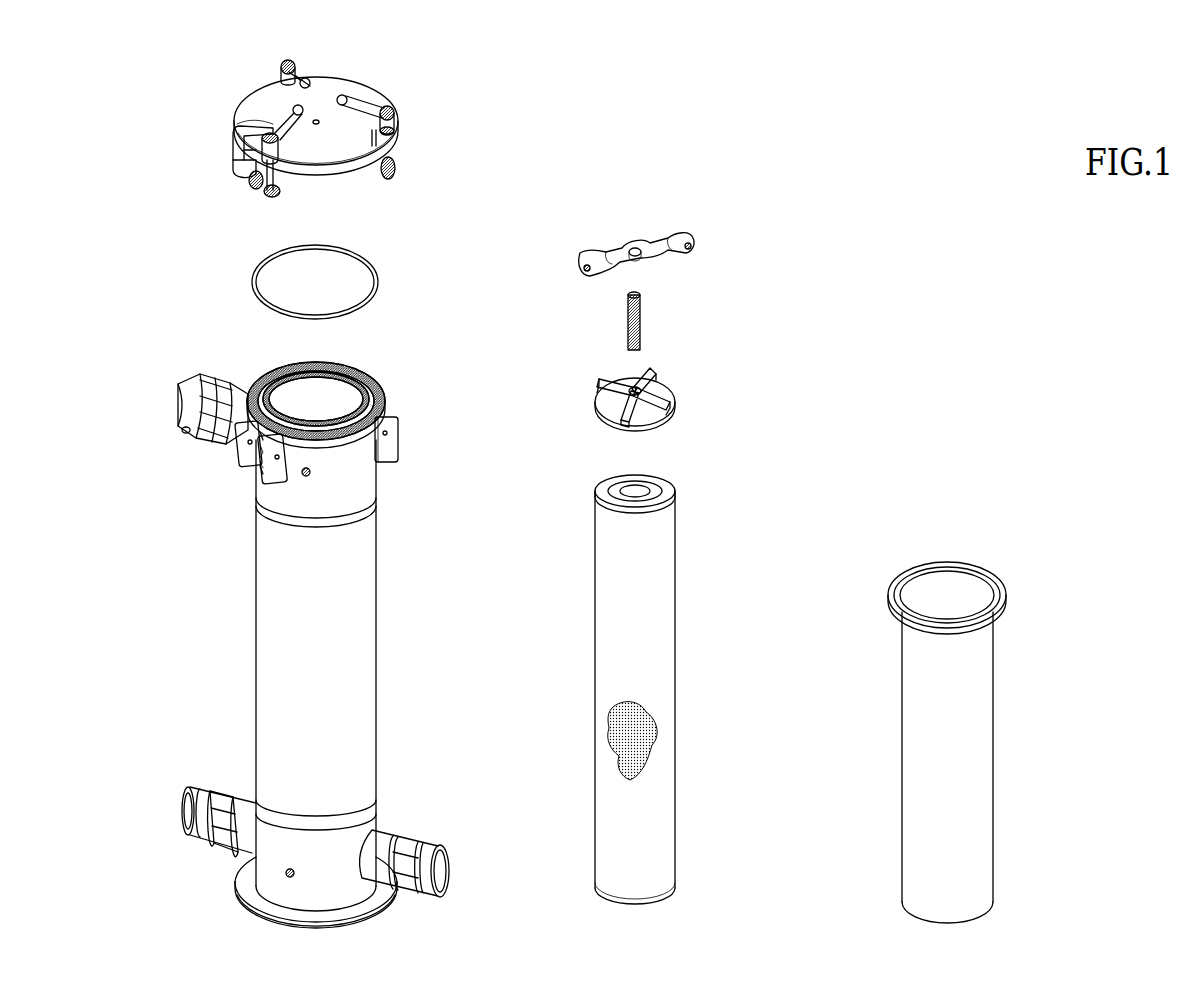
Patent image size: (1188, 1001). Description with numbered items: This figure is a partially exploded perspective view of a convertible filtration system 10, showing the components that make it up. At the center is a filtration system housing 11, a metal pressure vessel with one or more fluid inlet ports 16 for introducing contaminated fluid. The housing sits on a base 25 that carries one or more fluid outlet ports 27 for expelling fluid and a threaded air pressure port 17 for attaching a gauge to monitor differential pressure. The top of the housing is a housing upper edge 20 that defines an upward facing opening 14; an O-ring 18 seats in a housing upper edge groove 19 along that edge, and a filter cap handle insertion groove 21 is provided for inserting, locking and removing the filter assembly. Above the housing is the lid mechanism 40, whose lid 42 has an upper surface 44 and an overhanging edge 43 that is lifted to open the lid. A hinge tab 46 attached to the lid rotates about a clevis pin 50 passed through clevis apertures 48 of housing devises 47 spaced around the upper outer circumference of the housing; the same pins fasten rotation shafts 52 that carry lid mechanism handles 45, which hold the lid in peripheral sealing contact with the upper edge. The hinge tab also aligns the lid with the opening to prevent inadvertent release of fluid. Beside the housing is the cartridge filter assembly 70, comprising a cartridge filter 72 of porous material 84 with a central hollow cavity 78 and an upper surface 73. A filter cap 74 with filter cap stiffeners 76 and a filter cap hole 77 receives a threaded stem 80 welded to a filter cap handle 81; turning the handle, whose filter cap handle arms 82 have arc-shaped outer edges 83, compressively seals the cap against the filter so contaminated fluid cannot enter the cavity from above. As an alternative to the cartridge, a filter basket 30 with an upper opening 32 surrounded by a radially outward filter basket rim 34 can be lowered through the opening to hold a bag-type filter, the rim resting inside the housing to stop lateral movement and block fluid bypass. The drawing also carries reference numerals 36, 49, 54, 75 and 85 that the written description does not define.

The convertible filtration system 10 is at (897, 122).
The filtration system housing 11 is at (319, 625).
The upward facing opening 14 is at (304, 410).
The fluid inlet port 16 is at (182, 395).
The air pressure port 17 is at (308, 478).
The O-ring 18 is at (378, 284).
The housing upper edge groove 19 is at (385, 392).
The housing upper edge 20 is at (365, 375).
The filter cap handle insertion groove 21 is at (330, 368).
The base 25 is at (380, 918).
The fluid outlet port 27 is at (185, 805).
The filter basket 30 is at (992, 724).
The upper opening 32 is at (950, 588).
The filter basket rim 34 is at (1000, 580).
The sleeve bottom 36 is at (975, 918).
The lid mechanism 40 is at (437, 92).
The lid 42 is at (255, 95).
The overhanging edge 43 is at (350, 170).
The upper surface 44 is at (333, 90).
The lid mechanism handle 45 is at (285, 68).
The hinge tab 46 is at (238, 140).
The housing devise 47 is at (238, 456).
The clevis aperture 48 is at (388, 436).
The boss holes 49 is at (245, 425).
The clevis pin 50 is at (258, 194).
The rotation shaft 52 is at (278, 168).
The bracket hook 54 is at (238, 160).
The cartridge filter assembly 70 is at (716, 472).
The cartridge filter 72 is at (642, 674).
The upper surface 73 is at (612, 482).
The filter cap 74 is at (633, 384).
The filter bottom 75 is at (665, 897).
The filter cap stiffener 76 is at (654, 374).
The filter cap hole 77 is at (632, 388).
The central hollow cavity 78 is at (640, 482).
The stem 80 is at (643, 325).
The filter cap handle 81 is at (642, 242).
The filter cap handle arm 82 is at (605, 252).
The outer edge 83 is at (694, 242).
The porous material 84 is at (668, 735).
The handle hub 85 is at (648, 258).